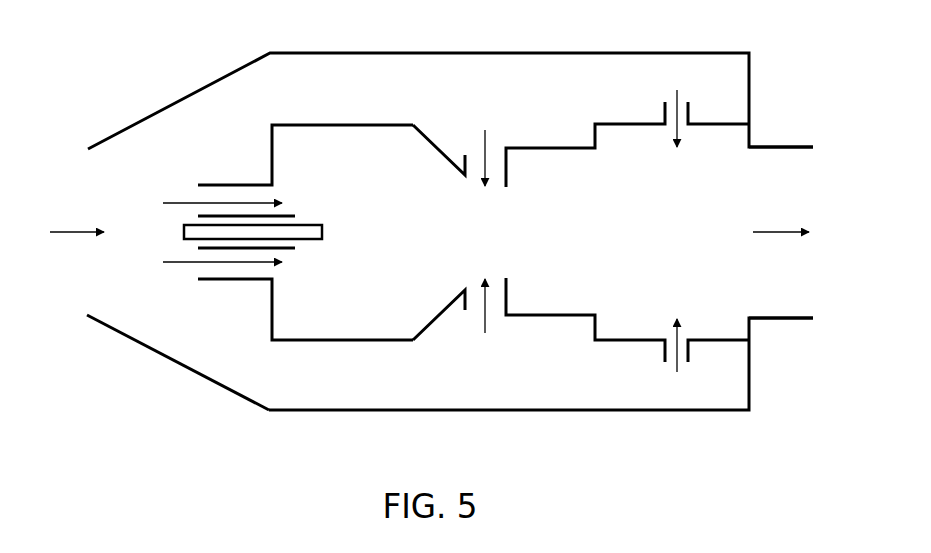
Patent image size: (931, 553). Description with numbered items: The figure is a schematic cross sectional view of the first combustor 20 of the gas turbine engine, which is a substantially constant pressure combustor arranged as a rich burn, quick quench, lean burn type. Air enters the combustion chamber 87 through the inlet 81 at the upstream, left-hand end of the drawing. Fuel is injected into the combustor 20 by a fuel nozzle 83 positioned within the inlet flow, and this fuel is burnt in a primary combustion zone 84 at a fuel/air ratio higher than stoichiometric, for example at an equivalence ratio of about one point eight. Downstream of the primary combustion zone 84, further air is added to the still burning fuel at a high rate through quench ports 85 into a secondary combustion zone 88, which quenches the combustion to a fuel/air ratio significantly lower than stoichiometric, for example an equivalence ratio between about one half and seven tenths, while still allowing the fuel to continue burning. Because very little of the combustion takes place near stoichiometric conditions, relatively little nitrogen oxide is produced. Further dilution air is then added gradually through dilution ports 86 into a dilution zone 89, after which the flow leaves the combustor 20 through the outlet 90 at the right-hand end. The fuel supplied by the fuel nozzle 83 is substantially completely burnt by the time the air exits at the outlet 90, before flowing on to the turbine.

The first combustor 20 is at (130, 74).
The inlet 81 is at (98, 290).
The fuel nozzle 83 is at (295, 250).
The primary combustion zone 84 is at (412, 285).
The quench ports 85 is at (485, 135).
The dilution ports 86 is at (675, 100).
The combustion chamber 87 is at (505, 412).
The secondary combustion zone 88 is at (528, 270).
The dilution zone 89 is at (800, 292).
The outlet 90 is at (793, 145).